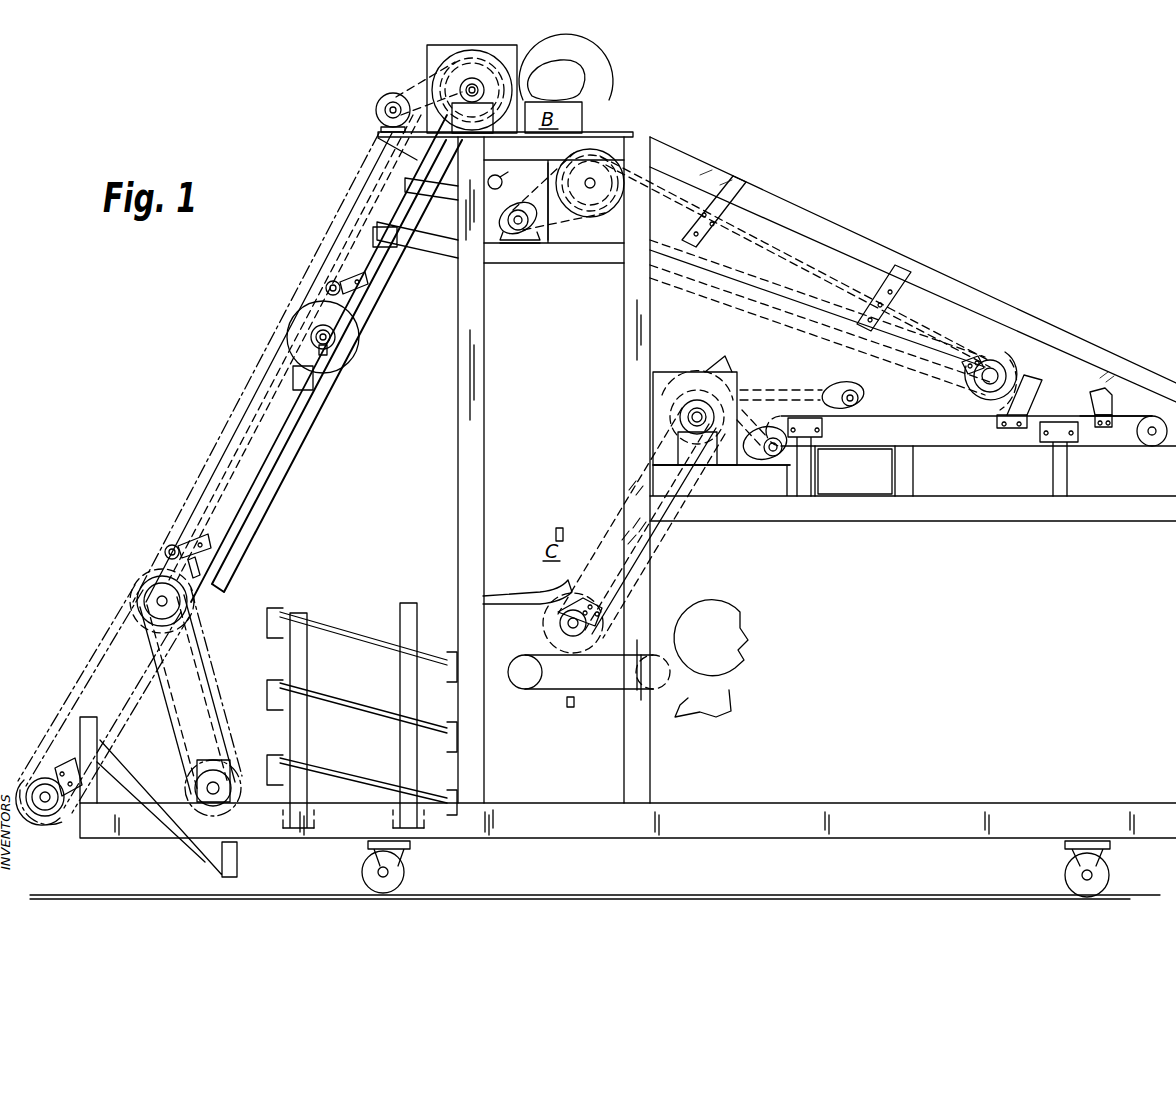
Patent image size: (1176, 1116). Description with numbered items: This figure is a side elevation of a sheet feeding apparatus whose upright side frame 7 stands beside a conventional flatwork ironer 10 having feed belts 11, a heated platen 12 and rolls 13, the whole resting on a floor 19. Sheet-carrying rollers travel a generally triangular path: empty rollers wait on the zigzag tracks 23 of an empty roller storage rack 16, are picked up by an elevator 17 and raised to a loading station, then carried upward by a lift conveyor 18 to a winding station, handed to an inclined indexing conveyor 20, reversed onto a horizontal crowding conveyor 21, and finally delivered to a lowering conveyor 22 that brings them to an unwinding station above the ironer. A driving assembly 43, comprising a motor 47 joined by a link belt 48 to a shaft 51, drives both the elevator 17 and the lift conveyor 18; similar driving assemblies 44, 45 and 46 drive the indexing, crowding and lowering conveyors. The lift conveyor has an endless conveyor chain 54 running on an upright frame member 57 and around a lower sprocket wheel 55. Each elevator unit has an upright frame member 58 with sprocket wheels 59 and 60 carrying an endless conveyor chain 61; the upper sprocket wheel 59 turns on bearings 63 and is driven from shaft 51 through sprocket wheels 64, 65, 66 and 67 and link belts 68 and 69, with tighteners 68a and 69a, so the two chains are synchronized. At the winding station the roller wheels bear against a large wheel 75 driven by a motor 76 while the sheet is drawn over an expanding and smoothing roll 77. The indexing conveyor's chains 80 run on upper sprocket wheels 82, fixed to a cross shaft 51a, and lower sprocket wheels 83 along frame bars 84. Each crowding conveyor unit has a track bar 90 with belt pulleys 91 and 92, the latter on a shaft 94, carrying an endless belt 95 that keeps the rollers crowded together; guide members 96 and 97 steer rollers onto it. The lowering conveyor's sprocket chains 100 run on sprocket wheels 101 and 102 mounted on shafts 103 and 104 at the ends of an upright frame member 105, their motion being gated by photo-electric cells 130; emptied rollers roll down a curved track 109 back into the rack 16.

The upright side frame 7 is at (478, 365).
The flatwork ironer 10 is at (734, 672).
The feed belts 11 is at (594, 696).
The heated platen 12 is at (716, 708).
The rolls 13 is at (738, 625).
The empty roller storage rack 16 is at (362, 699).
The elevator 17 is at (206, 702).
The lift conveyor 18 is at (239, 491).
The floor 19 is at (568, 893).
The indexing conveyor 20 is at (938, 256).
The crowding conveyor 21 is at (980, 462).
The lowering conveyor 22 is at (598, 520).
The zigzag tracks 23 is at (345, 650).
The driving assembly 43 is at (403, 95).
The driving assembly 44 is at (545, 250).
The driving assembly 45 is at (858, 381).
The driving assembly 46 is at (765, 478).
The motor 47 is at (377, 110).
The link belt 48 is at (572, 240).
The shaft 51 is at (440, 108).
The cross shaft 51a is at (594, 180).
The endless conveyor chain 54 is at (60, 758).
The sprocket wheel 55 is at (58, 827).
The upright frame member 57 is at (255, 472).
The upright frame member 58 is at (198, 732).
The sprocket wheel 59 is at (136, 614).
The sprocket wheel 60 is at (240, 787).
The endless conveyor chain 61 is at (228, 734).
The bearings 63 is at (157, 602).
The sprocket wheel 64 is at (143, 586).
The sprocket wheel 65 is at (338, 360).
The sprocket wheel 66 is at (305, 328).
The sprocket wheel 67 is at (480, 86).
The link belt 68 is at (312, 348).
The tightener 68a is at (166, 548).
The link belt 69 is at (375, 322).
The tightener 69a is at (326, 288).
The wheel 75 is at (612, 74).
The motor 76 is at (585, 66).
The expanding and smoothing roll 77 is at (510, 180).
The conveyor chains 80 is at (782, 323).
The upper sprocket wheels 82 is at (636, 162).
The lower sprocket wheels 83 is at (1000, 368).
The frame bars 84 is at (775, 272).
The track bar 90 is at (998, 445).
The belt pulley 91 is at (758, 420).
The belt pulley 92 is at (1150, 448).
The shaft 94 is at (1148, 436).
The endless belt 95 is at (849, 452).
The guide member 96 is at (1098, 388).
The guide member 97 is at (1110, 402).
The sprocket chains 100 is at (656, 534).
The sprocket wheel 101 is at (678, 424).
The sprocket wheel 102 is at (556, 632).
The shaft 103 is at (690, 414).
The shaft 104 is at (566, 622).
The upright frame member 105 is at (618, 578).
The curved track 109 is at (548, 590).
The photo-electric cells 130 is at (553, 530).